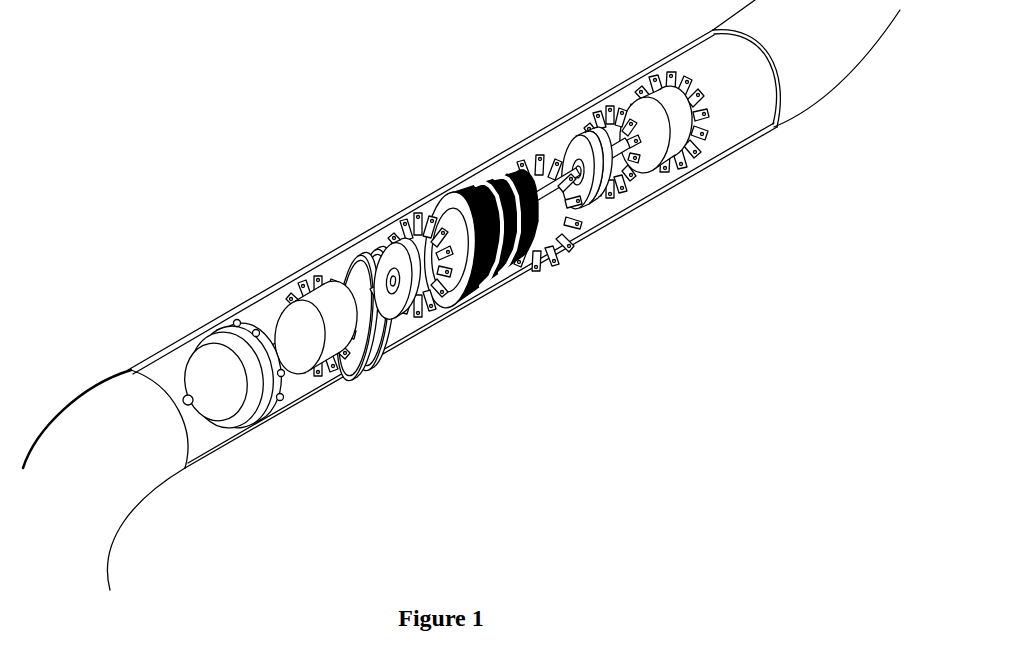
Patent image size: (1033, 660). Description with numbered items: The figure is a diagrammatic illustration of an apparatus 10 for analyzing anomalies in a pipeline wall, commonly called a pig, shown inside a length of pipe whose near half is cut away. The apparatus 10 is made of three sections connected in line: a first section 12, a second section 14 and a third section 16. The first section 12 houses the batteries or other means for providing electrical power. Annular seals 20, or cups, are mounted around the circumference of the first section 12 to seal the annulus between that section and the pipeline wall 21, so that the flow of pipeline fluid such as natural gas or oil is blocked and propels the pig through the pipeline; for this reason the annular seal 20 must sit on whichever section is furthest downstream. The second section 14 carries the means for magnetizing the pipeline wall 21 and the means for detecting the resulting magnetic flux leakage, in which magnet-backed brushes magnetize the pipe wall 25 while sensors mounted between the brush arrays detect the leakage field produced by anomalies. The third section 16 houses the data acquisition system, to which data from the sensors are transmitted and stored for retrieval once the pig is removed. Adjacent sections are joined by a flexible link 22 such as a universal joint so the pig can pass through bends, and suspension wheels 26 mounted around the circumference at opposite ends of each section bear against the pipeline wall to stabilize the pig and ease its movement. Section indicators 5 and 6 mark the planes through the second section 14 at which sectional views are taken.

The section line 5- 5 is at (410, 200).
The section line 6- 6 is at (457, 177).
The apparatus 10 is at (593, 392).
The first section 12 is at (300, 328).
The second section 14 is at (562, 245).
The third section 16 is at (630, 123).
The annular seals 20 is at (207, 337).
The pipeline wall 21 is at (165, 462).
The flexible link 22 is at (573, 180).
The pipe wall 25 is at (343, 243).
The suspension wheels 26 is at (345, 370).